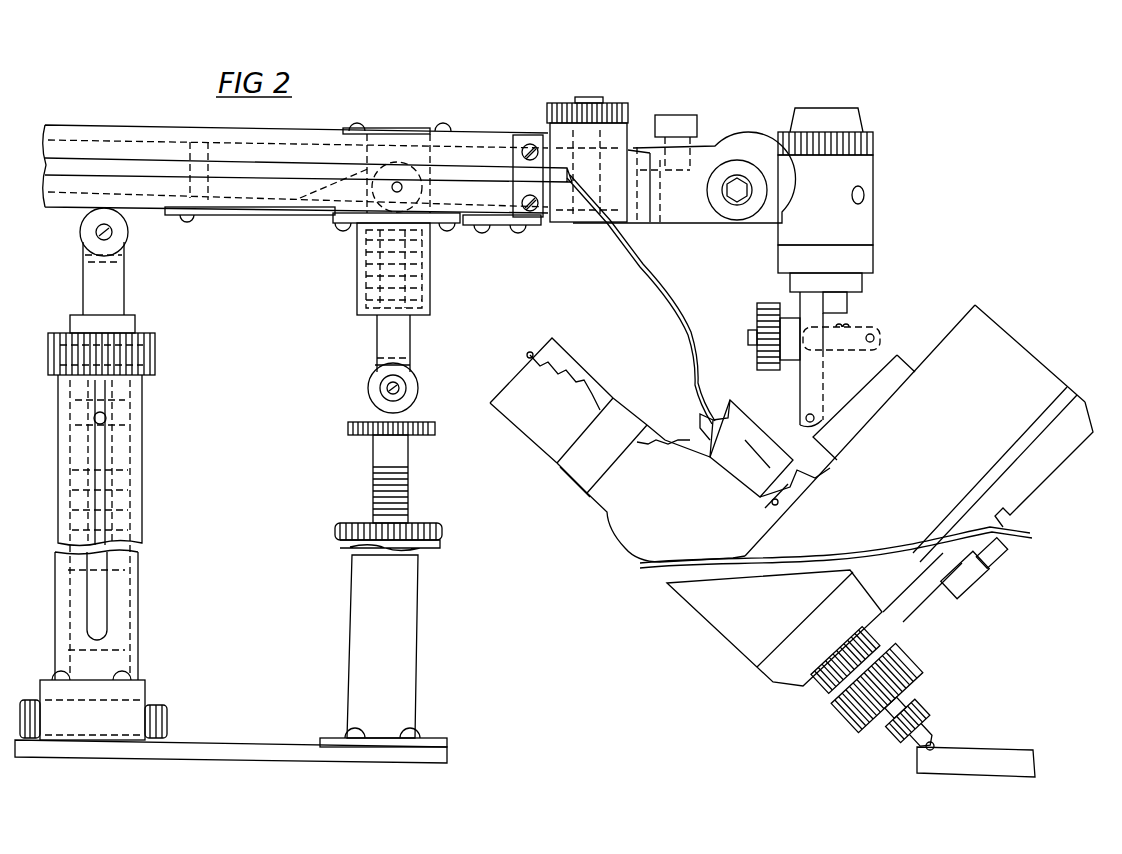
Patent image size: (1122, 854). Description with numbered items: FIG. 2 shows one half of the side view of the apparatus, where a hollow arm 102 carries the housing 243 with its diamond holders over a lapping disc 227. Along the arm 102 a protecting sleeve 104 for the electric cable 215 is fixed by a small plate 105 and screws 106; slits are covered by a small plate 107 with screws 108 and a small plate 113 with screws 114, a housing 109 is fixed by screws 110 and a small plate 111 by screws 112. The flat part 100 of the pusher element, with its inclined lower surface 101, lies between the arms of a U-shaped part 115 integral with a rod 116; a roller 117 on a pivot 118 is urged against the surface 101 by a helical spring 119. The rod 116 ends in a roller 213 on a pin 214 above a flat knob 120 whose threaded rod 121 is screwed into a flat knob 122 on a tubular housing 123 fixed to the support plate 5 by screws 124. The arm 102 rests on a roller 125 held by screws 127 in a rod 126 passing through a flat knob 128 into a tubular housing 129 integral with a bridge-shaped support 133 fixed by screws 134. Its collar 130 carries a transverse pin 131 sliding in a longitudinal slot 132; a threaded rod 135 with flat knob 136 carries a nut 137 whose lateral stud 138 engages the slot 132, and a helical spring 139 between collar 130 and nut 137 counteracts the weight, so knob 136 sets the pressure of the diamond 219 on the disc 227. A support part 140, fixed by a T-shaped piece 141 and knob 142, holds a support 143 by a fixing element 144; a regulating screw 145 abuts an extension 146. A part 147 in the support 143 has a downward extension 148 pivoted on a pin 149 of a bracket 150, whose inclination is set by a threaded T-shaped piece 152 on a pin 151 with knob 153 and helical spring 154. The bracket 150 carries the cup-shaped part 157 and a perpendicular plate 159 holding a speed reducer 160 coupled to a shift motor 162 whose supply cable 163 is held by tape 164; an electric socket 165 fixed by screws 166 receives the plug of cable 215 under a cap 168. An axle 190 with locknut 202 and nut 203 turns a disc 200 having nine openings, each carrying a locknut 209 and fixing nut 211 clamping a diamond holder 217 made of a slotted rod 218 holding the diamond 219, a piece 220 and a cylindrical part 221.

The support plate 5 is at (228, 753).
The flat part 100 is at (330, 160).
The inclined lower surface 101 is at (318, 190).
The hollow arm 102 is at (75, 134).
The protecting sleeve 104 is at (150, 165).
The small plate 105 is at (515, 137).
The screws 106 is at (546, 134).
The small plate 107 is at (266, 213).
The screws 108 is at (190, 214).
The housing 109 is at (420, 285).
The screws 110 is at (350, 223).
The small plate 111 is at (518, 226).
The screws 112 is at (484, 226).
The small plate 113 is at (392, 133).
The screws 114 is at (468, 128).
The U-shaped part 115 is at (405, 233).
The rod 116 is at (377, 340).
The roller 117 is at (440, 184).
The pivot 118 is at (400, 183).
The helical spring 119 is at (412, 305).
The flat knob 120 is at (430, 426).
The threaded rod 121 is at (408, 500).
The flat knob 122 is at (432, 534).
The tubular housing 123 is at (418, 635).
The screws 124 is at (453, 732).
The roller 125 is at (128, 228).
The rod 126 is at (125, 287).
The screws 127 is at (112, 238).
The flat knob 128 is at (156, 357).
The tubular housing 129 is at (143, 456).
The collar 130 is at (120, 403).
The transverse pin 131 is at (106, 420).
The longitudinal slot 132 is at (90, 628).
The bridge-shaped support 133 is at (146, 690).
The screws 134 is at (128, 679).
The threaded rod 135 is at (115, 485).
The flat knob 136 is at (170, 712).
The nut 137 is at (118, 598).
The lateral stud 138 is at (93, 585).
The helical spring 139 is at (120, 515).
The support part 140 is at (658, 135).
The T-shaped piece 141 is at (592, 198).
The knob 142 is at (628, 115).
The support 143 is at (875, 200).
The fixing element 144 is at (735, 188).
The regulating screw 145 is at (692, 122).
The extension 146 is at (660, 224).
The part 147 is at (866, 148).
The downward extension 148 is at (812, 402).
The pin 149 is at (807, 420).
The bracket 150 is at (898, 362).
The pin 151 is at (876, 338).
The threaded T-shaped piece 152 is at (755, 332).
The knob 153 is at (767, 308).
The helical spring 154 is at (847, 326).
The cup-shaped part 157 is at (997, 348).
The perpendicular plate 159 is at (723, 410).
The speed reducer 160 is at (647, 559).
The shift motor 162 is at (555, 463).
The supply cable 163 is at (545, 362).
The tape 164 is at (627, 408).
The electric socket 165 is at (769, 500).
The screws 166 is at (782, 498).
The cap 168 is at (743, 478).
The axle 190 is at (1003, 560).
The disc 200 is at (1080, 423).
The locknut 202 is at (953, 573).
The nut 203 is at (975, 580).
The locknut 209 is at (827, 690).
The fixing nut 211 is at (888, 650).
The roller 213 is at (416, 389).
The pin 214 is at (398, 388).
The electric cable 215 is at (667, 292).
The diamond holder 217 is at (873, 728).
The slotted rod 218 is at (943, 730).
The diamond 219 is at (926, 750).
The piece 220 is at (933, 702).
The cylindrical part 221 is at (910, 687).
The lapping disc 227 is at (990, 747).
The housing 243 is at (704, 642).